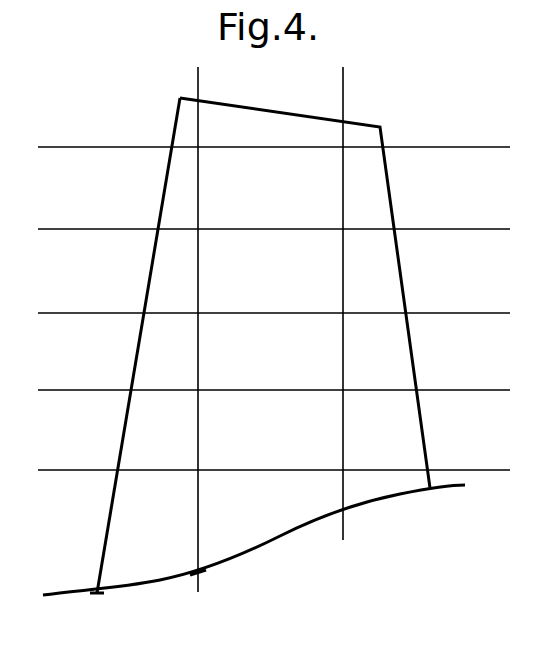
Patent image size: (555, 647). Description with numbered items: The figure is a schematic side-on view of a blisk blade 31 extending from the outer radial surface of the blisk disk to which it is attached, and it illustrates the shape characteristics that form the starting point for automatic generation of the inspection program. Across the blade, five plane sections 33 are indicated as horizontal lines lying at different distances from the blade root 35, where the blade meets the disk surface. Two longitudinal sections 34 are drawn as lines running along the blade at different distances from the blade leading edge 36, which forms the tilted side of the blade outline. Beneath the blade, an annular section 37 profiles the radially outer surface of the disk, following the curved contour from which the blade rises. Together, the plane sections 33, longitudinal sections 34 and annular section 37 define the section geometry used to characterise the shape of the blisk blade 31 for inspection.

The blisk blade 31 is at (371, 125).
The plane sections 33 is at (66, 148).
The longitudinal sections 34 is at (343, 540).
The blade root 35 is at (180, 571).
The blade leading edge 36 is at (175, 128).
The annular section 37 is at (112, 590).